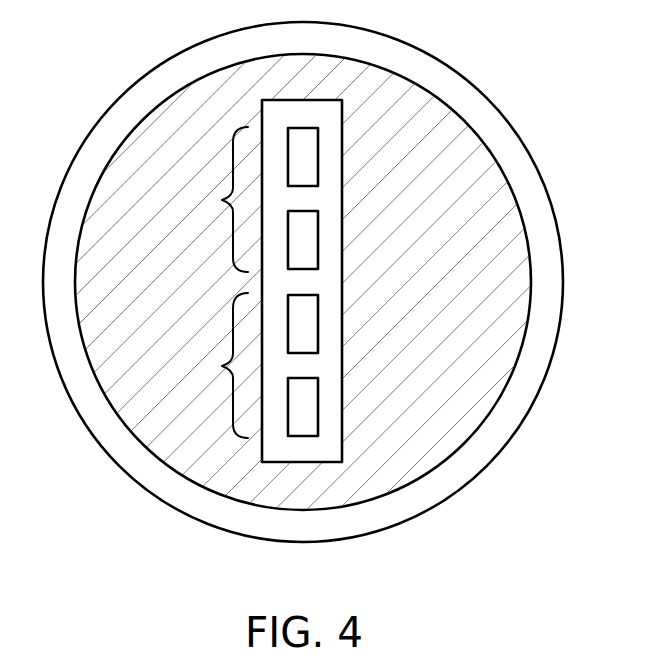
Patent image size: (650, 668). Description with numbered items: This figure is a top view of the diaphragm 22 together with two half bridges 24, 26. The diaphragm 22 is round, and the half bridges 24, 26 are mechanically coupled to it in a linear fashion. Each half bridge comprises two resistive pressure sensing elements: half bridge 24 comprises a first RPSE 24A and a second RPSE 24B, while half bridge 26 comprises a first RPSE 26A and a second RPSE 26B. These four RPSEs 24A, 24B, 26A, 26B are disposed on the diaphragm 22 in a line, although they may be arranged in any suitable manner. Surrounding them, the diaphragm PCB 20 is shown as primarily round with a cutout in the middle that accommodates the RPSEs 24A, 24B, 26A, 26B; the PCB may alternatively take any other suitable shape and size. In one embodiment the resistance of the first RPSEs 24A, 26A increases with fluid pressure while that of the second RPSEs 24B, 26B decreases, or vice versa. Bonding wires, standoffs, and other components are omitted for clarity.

The diaphragm PCB 20 is at (528, 295).
The diaphragm 22 is at (563, 273).
The half bridge 24 is at (222, 200).
The first RPSE 24A is at (317, 154).
The second RPSE 24B is at (317, 242).
The half bridge 26 is at (222, 366).
The first RPSE 26A is at (317, 410).
The second RPSE 26B is at (317, 322).